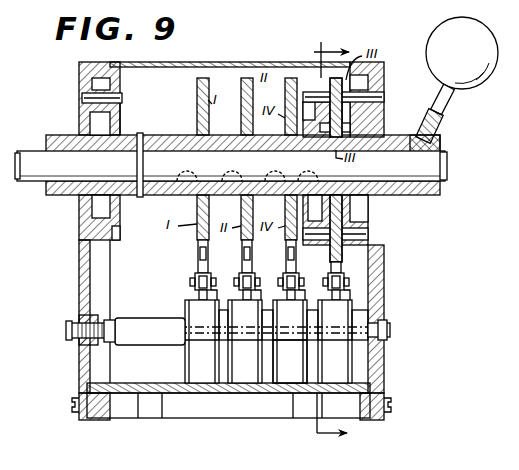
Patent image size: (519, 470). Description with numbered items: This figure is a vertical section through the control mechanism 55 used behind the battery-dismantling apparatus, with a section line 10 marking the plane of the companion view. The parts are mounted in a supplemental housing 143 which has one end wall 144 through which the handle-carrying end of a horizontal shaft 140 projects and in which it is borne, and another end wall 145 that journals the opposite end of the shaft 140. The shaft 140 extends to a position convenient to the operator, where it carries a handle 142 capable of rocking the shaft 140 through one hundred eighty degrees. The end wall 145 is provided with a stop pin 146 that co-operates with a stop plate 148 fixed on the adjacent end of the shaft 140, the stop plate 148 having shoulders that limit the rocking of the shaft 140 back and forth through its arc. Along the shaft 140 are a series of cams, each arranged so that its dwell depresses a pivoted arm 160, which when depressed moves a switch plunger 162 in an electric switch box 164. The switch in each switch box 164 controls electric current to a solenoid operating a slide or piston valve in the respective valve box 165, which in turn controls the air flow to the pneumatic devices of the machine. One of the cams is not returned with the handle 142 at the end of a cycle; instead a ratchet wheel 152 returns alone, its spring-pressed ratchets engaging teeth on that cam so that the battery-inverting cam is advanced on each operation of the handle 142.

The section line 10- 10 is at (321, 242).
The control mechanism 55 is at (174, 100).
The horizontal shaft 140 is at (30, 153).
The handle 142 is at (441, 37).
The supplemental housing 143 is at (247, 66).
The end wall 144 is at (378, 272).
The end wall 145 is at (80, 268).
The stop pin 146 is at (84, 100).
The stop plate 148 is at (120, 127).
The ratchet wheel 152 is at (312, 92).
The pivoted arm 160 is at (197, 268).
The switch plunger 162 is at (190, 296).
The electric switch box 164 is at (192, 333).
The valve box 165 is at (335, 366).